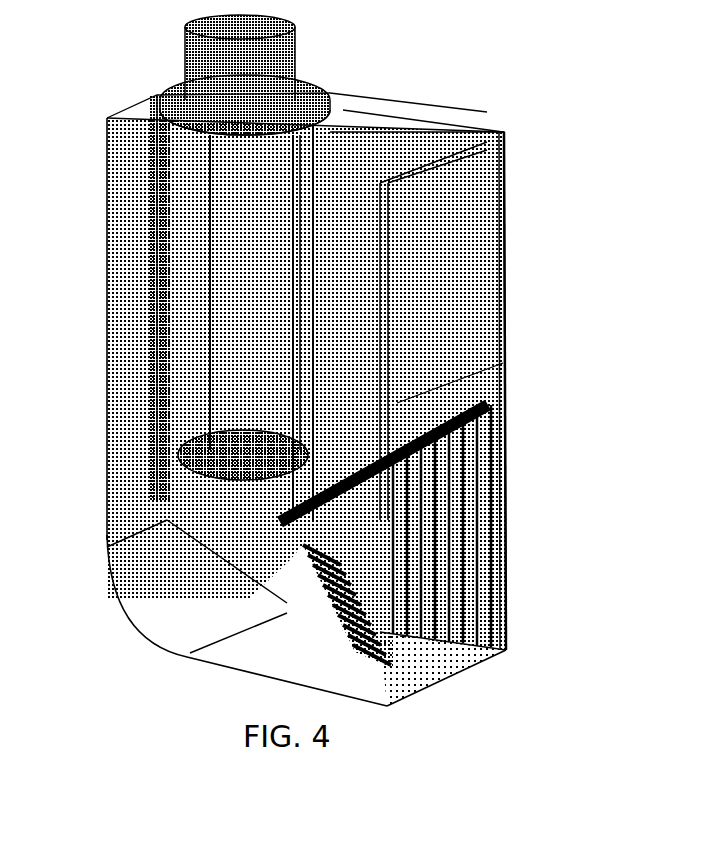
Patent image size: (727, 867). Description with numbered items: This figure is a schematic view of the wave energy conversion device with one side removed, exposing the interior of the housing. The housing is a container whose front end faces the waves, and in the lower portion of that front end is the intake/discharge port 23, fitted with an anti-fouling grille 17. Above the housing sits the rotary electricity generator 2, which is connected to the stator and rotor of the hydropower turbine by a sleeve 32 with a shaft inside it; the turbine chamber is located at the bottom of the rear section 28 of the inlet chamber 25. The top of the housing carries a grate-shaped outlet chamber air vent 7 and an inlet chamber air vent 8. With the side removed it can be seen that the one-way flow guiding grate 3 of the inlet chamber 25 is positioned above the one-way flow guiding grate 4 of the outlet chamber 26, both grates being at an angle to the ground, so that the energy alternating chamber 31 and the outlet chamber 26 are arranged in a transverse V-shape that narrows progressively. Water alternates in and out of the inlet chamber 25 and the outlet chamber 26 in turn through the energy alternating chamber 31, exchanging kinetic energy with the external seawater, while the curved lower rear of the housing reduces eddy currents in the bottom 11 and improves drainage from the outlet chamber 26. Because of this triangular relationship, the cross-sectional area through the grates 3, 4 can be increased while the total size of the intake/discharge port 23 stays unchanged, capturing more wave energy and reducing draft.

The rotary electricity generator 2 is at (250, 52).
The outlet chamber air vent 7 is at (330, 105).
The inlet chamber air vent 8 is at (385, 157).
The inlet chamber 25 is at (355, 331).
The sleeve 32 is at (225, 203).
The rear section of the inlet chamber 28 is at (190, 343).
The intake/discharge port 23 is at (480, 470).
The anti-fouling grille 17 is at (482, 510).
The one-way flow guiding grate of the inlet chamber 3 is at (370, 495).
The energy alternating chamber 31 is at (350, 527).
The outlet chamber 26 is at (250, 597).
The bottom of the housing 11 is at (275, 660).
The one-way flow guiding grate of the outlet chamber 4 is at (480, 643).